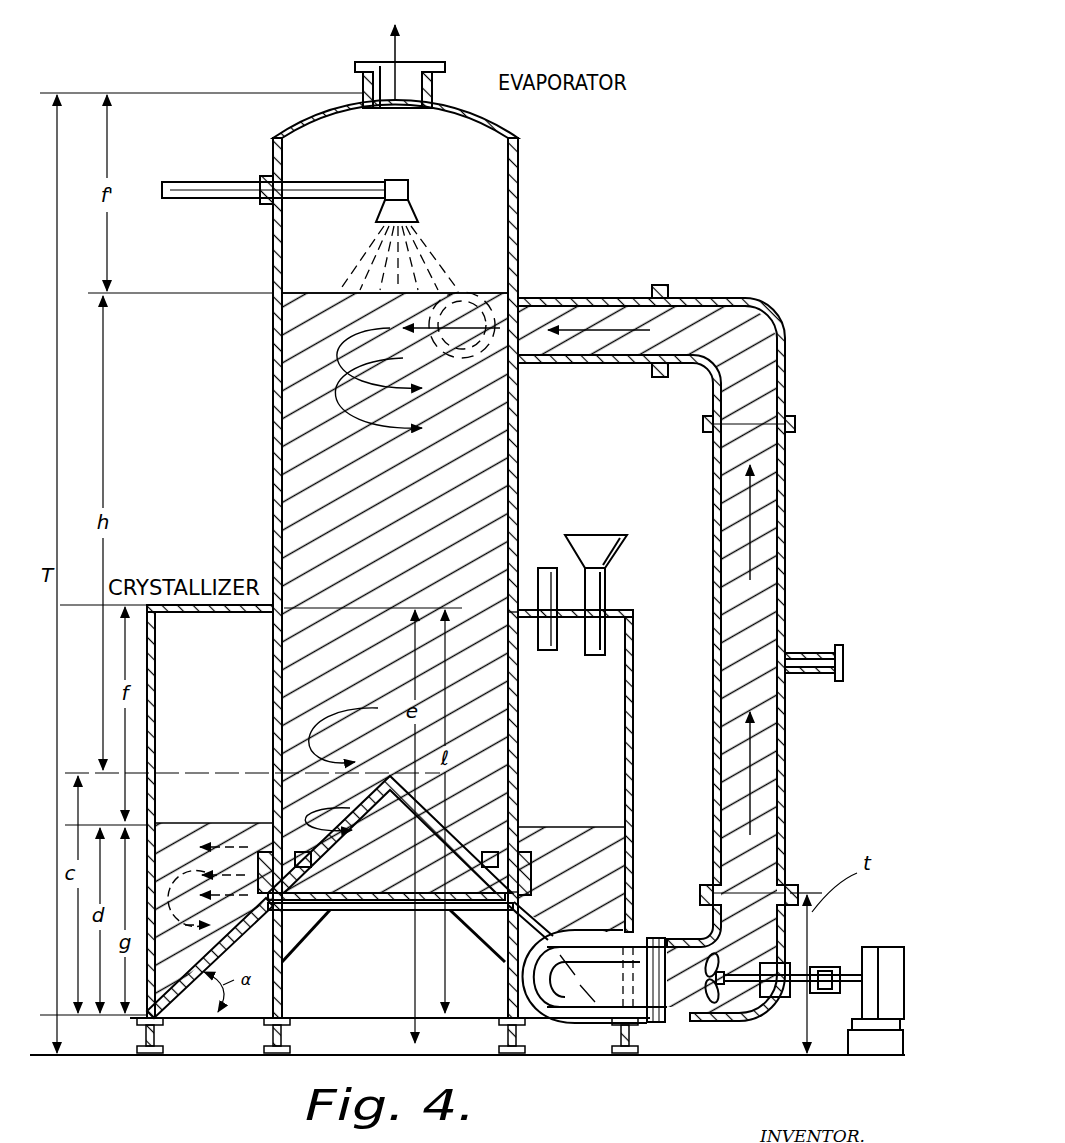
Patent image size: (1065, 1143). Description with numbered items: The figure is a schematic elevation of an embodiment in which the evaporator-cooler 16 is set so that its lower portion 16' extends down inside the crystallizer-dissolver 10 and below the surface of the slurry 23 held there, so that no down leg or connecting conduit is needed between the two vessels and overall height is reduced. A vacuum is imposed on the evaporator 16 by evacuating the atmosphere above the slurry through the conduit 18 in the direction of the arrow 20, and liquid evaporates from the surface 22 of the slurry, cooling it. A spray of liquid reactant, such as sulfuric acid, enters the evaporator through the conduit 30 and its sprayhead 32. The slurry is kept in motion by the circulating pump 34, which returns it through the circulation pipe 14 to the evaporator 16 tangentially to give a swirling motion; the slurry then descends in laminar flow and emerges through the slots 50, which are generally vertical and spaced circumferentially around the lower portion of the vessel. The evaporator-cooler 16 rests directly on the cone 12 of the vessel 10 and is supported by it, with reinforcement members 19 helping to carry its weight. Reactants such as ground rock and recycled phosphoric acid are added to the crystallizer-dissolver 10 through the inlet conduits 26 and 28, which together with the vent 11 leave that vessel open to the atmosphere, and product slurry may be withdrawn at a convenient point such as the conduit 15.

The crystallizer-dissolver 10 is at (633, 746).
The vent 11 is at (198, 612).
The cone 12 is at (333, 838).
The circulation pipe 14 is at (786, 513).
The conduit 15 is at (812, 673).
The evaporator-cooler 16 is at (424, 559).
The lower portion of evaporator vessel 16' is at (543, 752).
The conduit 18 is at (362, 96).
The reinforcement members 19 is at (282, 970).
The arrow 20 is at (395, 50).
The surface of the slurry 22 is at (337, 291).
The surface of the slurry 23 is at (550, 827).
The inlet conduit 26 is at (615, 562).
The inlet conduit 28 is at (532, 566).
The conduit 30 is at (222, 200).
The sprayhead 32 is at (414, 216).
The circulating pump 34 is at (883, 946).
The slots 50 is at (263, 852).